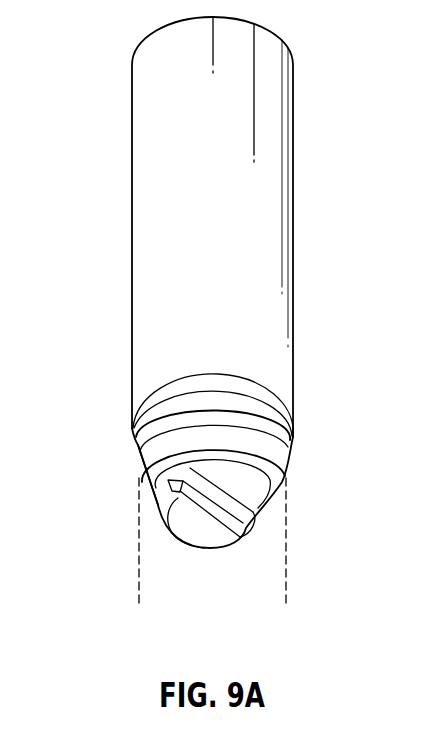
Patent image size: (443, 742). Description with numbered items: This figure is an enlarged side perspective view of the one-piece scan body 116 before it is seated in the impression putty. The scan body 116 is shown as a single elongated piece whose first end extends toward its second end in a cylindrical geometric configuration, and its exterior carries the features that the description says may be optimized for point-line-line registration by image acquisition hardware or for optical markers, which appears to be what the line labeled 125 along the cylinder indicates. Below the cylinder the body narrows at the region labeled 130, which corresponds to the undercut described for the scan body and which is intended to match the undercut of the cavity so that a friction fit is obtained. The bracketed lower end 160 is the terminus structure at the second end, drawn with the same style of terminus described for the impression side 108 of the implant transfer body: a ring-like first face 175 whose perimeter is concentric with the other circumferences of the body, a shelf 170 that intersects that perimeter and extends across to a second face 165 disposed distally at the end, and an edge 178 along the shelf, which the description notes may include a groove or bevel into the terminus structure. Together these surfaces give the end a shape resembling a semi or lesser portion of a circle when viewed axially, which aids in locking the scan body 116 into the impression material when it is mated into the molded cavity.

The impression side 108 is at (126, 483).
The scan body 116 is at (293, 147).
The inner line / lumen 125 is at (244, 173).
The shoulder 130 is at (263, 400).
The tip 160 is at (286, 607).
The angled face 165 is at (195, 525).
The slot 170 is at (181, 475).
The ring 175 is at (252, 481).
The slot floor 178 is at (217, 512).